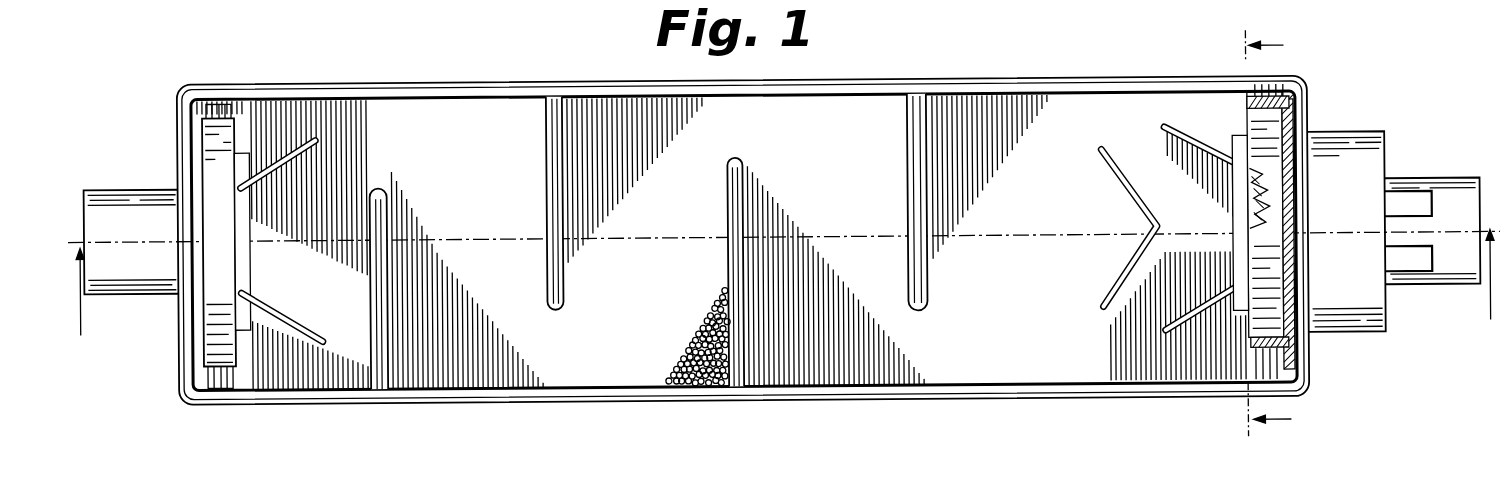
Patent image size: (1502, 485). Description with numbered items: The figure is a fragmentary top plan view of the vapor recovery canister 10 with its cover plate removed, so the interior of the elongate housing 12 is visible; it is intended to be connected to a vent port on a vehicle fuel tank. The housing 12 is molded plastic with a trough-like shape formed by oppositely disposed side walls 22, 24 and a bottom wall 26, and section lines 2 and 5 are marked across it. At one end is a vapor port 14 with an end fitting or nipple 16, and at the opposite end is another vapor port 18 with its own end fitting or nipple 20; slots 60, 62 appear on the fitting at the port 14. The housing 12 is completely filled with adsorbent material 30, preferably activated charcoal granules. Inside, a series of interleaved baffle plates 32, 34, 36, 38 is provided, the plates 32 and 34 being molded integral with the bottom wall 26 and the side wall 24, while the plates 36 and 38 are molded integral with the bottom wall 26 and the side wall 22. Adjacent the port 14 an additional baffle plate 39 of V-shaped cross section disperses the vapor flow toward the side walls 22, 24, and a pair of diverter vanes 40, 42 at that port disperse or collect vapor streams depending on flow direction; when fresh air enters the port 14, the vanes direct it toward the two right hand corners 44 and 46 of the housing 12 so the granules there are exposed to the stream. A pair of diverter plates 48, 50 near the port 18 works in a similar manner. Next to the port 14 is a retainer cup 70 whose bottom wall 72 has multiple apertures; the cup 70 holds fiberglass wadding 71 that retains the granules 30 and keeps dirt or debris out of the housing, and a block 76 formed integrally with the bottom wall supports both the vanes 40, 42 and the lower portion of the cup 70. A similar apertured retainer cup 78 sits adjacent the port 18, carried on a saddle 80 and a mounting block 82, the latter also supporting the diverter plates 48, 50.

The section line 2- 2 is at (786, 292).
The section line 5- 5 is at (1278, 233).
The canister 10 is at (1076, 60).
The housing 12 is at (898, 86).
The vapor port 14 is at (1394, 136).
The end fitting or nipple 16 is at (1466, 268).
The vapor port 18 is at (156, 174).
The end fitting or nipple 20 is at (137, 270).
The side wall 22 is at (528, 83).
The side wall 24 is at (617, 392).
The bottom wall 26 is at (834, 164).
The adsorbent material 30 is at (692, 417).
The baffle plate 32 is at (386, 204).
The baffle plate 34 is at (727, 184).
The baffle plate 36 is at (564, 292).
The baffle plate 38 is at (930, 284).
The V-shaped baffle plate 39 is at (1120, 198).
The diverter vane 40 is at (1198, 142).
The diverter vane 42 is at (1215, 302).
The right hand corner 44 is at (1240, 98).
The right hand corner 46 is at (1238, 356).
The diverter plate 48 is at (318, 134).
The diverter plate 50 is at (302, 328).
The slot 60 is at (1412, 265).
The slot 62 is at (1418, 196).
The retainer cup 70 is at (1302, 88).
The fiberglass wadding 71 is at (1255, 203).
The bottom wall of retainer cup 72 is at (1296, 124).
The block 76 is at (1240, 243).
The retainer cup 78 is at (232, 268).
The saddle 80 is at (220, 374).
The mounting block 82 is at (250, 276).